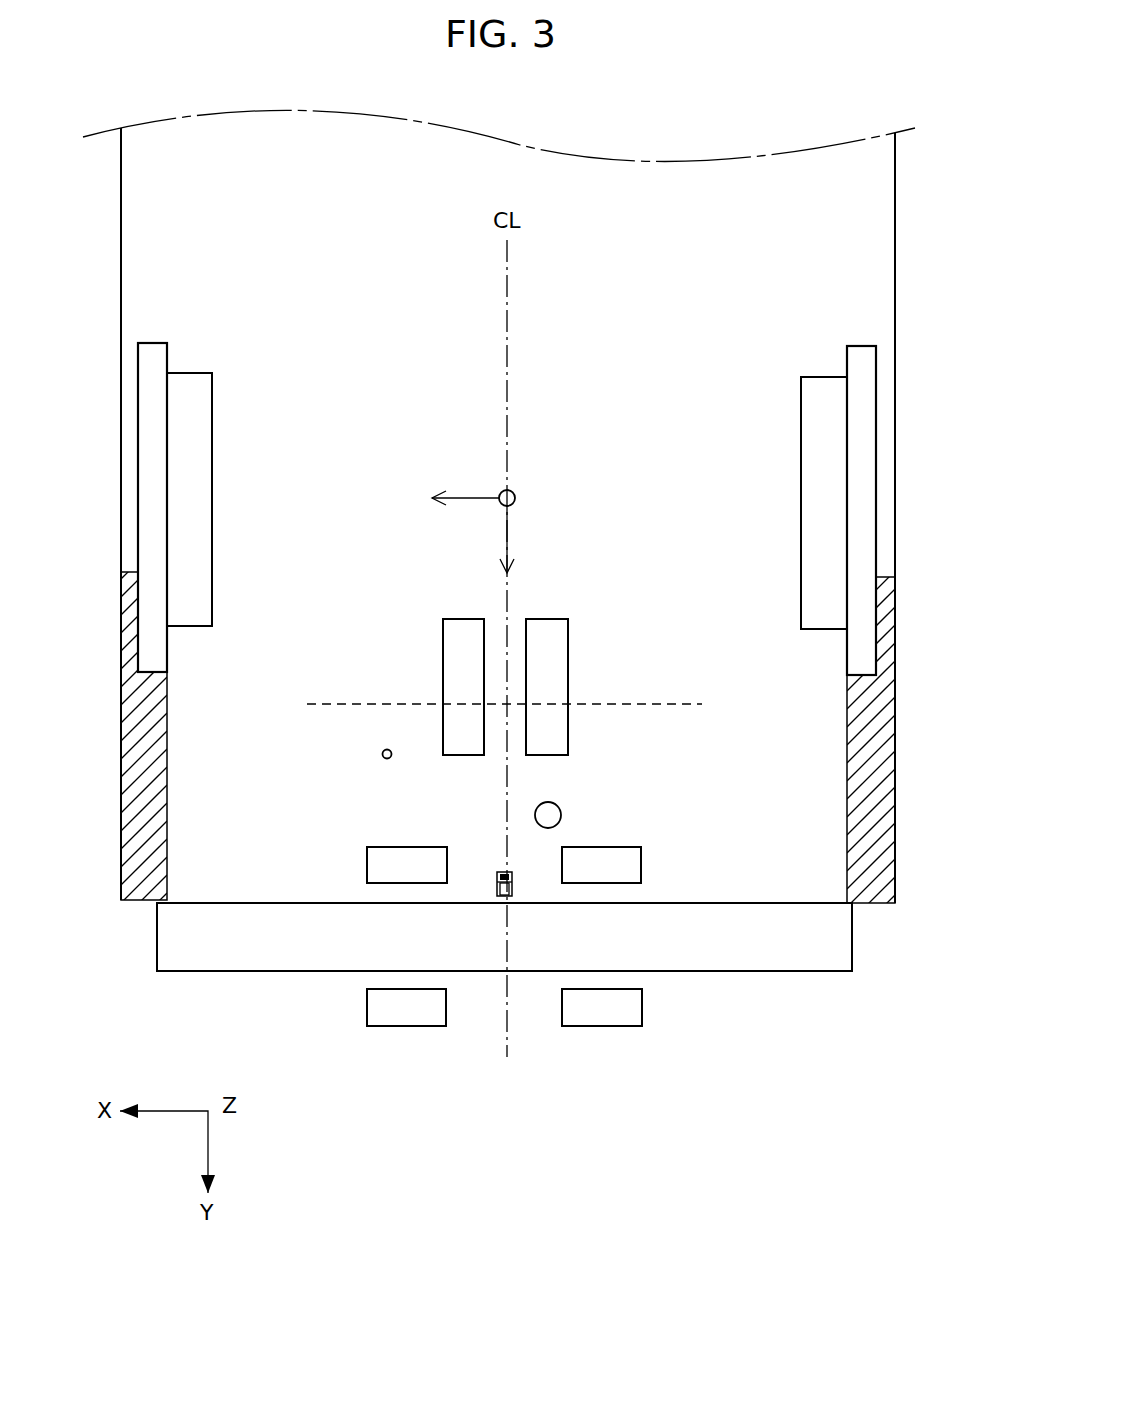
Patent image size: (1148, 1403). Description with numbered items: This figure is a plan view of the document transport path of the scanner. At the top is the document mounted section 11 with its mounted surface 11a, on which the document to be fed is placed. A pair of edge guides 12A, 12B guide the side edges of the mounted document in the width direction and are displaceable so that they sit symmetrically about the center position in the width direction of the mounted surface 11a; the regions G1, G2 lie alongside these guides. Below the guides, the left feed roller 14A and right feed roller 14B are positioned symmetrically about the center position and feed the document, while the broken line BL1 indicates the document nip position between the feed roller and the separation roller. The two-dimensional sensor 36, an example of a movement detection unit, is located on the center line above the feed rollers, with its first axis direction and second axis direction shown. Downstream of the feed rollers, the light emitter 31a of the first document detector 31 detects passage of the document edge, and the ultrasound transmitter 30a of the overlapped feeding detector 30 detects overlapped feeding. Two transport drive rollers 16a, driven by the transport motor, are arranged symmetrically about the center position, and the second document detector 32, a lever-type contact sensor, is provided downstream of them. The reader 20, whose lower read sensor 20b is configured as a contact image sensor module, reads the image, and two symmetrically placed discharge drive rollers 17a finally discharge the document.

The document mounted section 11 is at (499, 504).
The mounted surface 11a is at (191, 160).
The edge guide 12A is at (152, 343).
The edge guide 12B is at (862, 345).
The left gap/guide region G1 is at (167, 465).
The right gap/guide region G2 is at (847, 466).
The left feed roller 14A is at (448, 675).
The right feed roller 14B is at (562, 675).
The transport drive roller 16a is at (367, 853).
The discharge drive roller 17a is at (390, 1027).
The reader 20 is at (504, 971).
The lower read sensor 20b is at (230, 947).
The overlapped feeding detector 30 is at (615, 794).
The ultrasound transmitter 30a is at (562, 810).
The first document detector 31 is at (338, 737).
The light emitter 31a is at (382, 753).
The second document detector 32 is at (501, 872).
The two-dimensional sensor 36 is at (514, 492).
The broken line BL1 is at (528, 705).